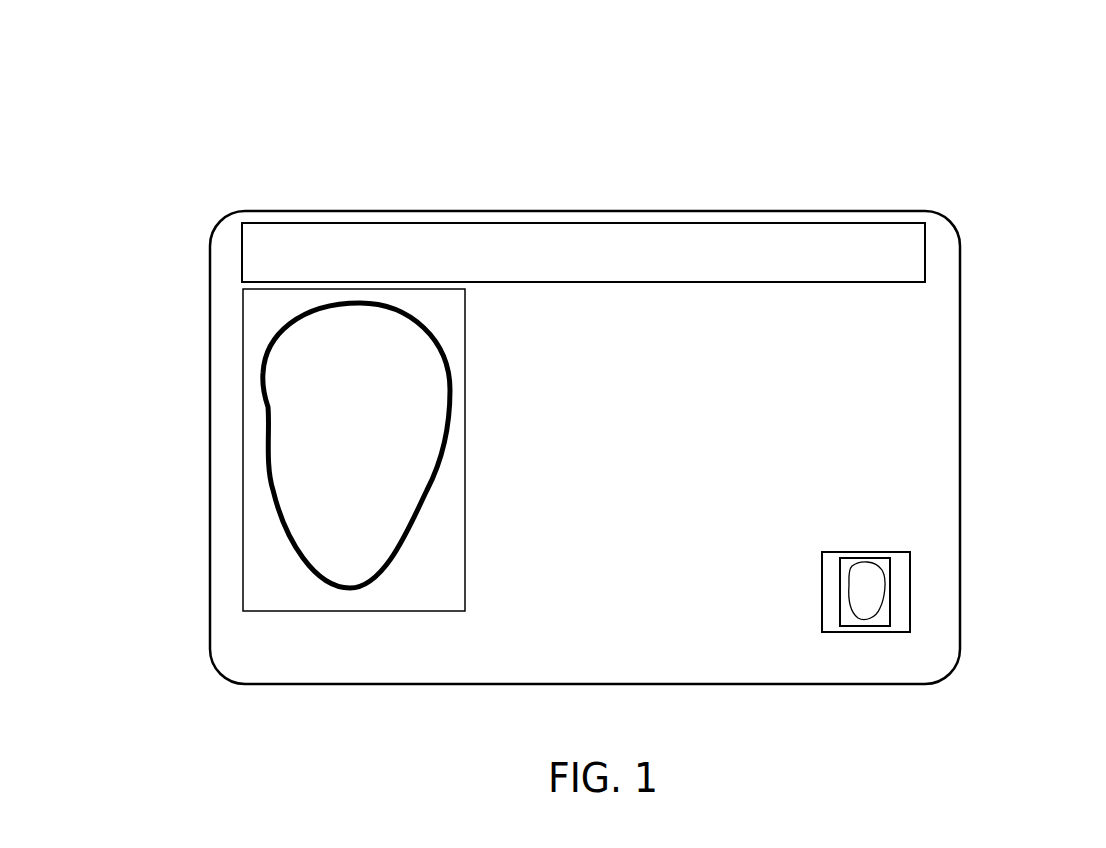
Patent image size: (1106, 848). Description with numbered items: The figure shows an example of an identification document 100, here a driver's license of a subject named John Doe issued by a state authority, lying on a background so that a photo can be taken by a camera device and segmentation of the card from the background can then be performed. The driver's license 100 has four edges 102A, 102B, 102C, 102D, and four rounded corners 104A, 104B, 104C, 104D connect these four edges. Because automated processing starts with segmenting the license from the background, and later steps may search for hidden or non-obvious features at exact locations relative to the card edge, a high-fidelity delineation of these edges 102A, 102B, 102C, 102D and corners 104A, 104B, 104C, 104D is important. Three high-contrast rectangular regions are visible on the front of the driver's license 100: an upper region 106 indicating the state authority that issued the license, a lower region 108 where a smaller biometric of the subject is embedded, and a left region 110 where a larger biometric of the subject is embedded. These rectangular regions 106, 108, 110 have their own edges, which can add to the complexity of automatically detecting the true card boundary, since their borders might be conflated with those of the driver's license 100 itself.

The identification document 100 is at (915, 104).
The edge 102A is at (961, 445).
The edge 102B is at (625, 211).
The edge 102C is at (209, 352).
The edge 102D is at (790, 686).
The rounded corner 104A is at (950, 224).
The rounded corner 104B is at (218, 226).
The rounded corner 104C is at (212, 660).
The rounded corner 104D is at (955, 672).
The upper region 106 is at (925, 260).
The lower region 108 is at (910, 574).
The left region 110 is at (255, 580).